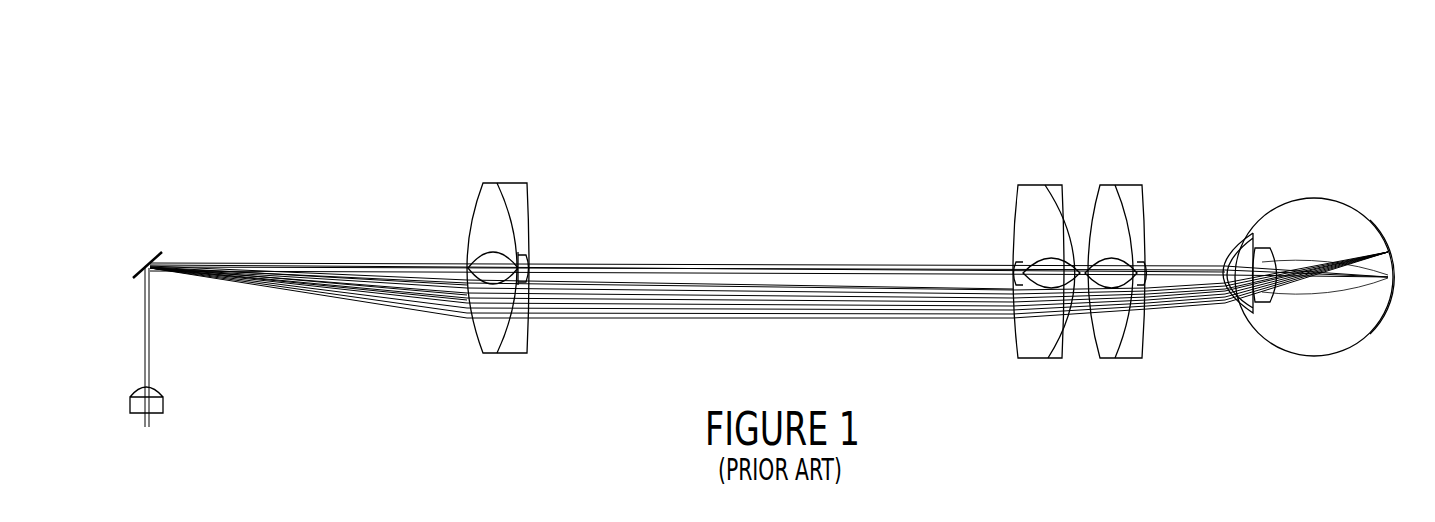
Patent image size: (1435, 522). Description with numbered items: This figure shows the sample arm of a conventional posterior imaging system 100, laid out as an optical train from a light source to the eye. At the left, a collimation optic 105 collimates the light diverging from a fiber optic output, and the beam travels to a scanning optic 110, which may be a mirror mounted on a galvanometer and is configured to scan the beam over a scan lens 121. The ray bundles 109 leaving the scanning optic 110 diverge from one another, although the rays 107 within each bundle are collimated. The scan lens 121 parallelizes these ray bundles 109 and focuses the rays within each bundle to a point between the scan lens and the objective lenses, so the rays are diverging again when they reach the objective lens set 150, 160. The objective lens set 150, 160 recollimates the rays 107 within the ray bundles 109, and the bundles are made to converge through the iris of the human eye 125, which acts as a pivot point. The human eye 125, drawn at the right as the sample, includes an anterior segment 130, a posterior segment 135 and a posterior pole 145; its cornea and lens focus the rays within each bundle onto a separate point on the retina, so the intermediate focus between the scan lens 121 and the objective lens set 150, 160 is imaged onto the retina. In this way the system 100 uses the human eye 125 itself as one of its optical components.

The posterior imaging system 100 is at (1097, 134).
The collimation optic 105 is at (148, 372).
The rays 107 is at (422, 272).
The ray bundles 109 is at (370, 268).
The scanning optic 110 is at (160, 255).
The scan lens 121 is at (500, 356).
The human eye 125 is at (1327, 164).
The anterior segment 130 is at (1232, 247).
The posterior segment 135 is at (1288, 295).
The posterior pole 145 is at (1360, 310).
The objective lens set 150 is at (1033, 362).
The objective lens set 160 is at (1115, 362).